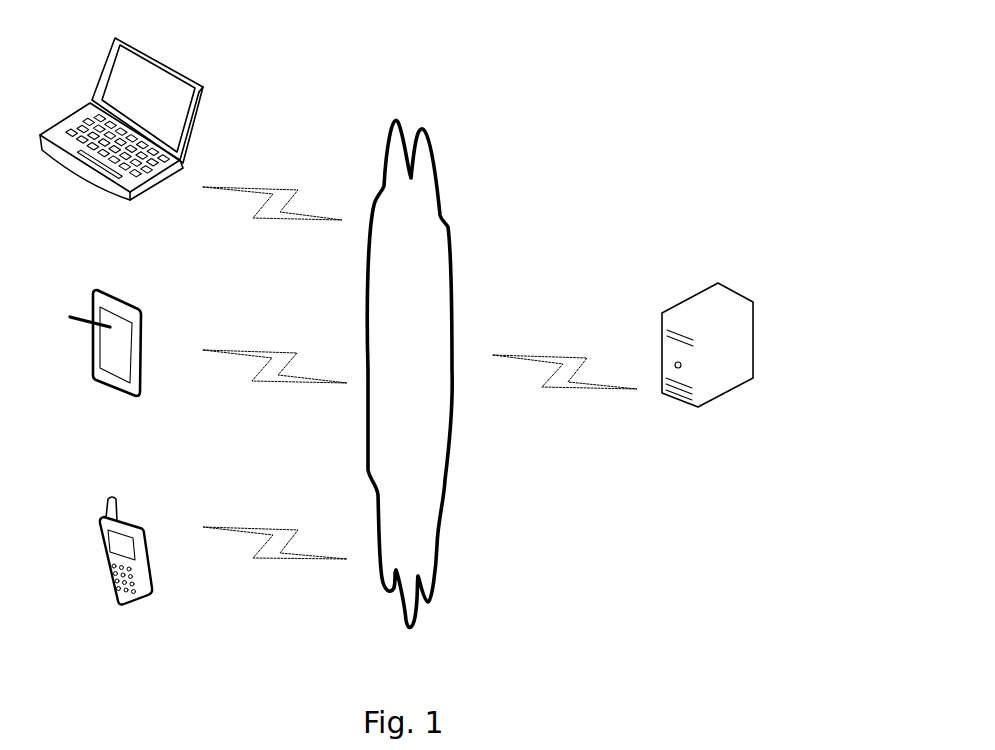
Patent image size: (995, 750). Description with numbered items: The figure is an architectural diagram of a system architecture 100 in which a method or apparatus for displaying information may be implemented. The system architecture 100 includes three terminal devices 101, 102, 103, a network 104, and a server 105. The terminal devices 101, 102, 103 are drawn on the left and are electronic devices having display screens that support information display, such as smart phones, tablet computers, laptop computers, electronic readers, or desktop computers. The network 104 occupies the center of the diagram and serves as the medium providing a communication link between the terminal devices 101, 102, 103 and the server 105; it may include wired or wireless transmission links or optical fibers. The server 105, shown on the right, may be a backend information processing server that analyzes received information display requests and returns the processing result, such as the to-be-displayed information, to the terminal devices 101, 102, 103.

The system architecture 100 is at (664, 30).
The terminal device 101 is at (126, 571).
The terminal device 102 is at (105, 363).
The terminal device 103 is at (121, 136).
The network 104 is at (409, 373).
The server 105 is at (707, 369).